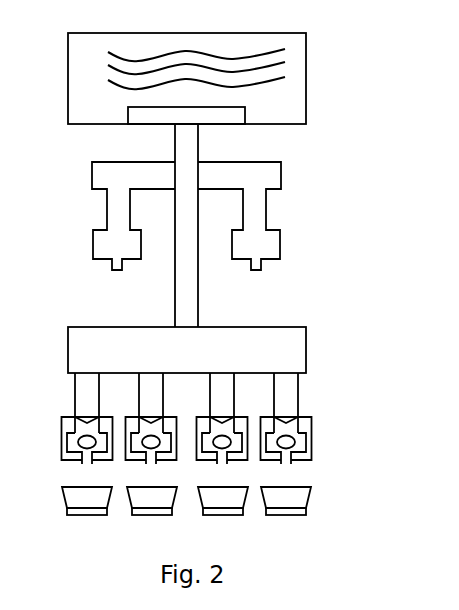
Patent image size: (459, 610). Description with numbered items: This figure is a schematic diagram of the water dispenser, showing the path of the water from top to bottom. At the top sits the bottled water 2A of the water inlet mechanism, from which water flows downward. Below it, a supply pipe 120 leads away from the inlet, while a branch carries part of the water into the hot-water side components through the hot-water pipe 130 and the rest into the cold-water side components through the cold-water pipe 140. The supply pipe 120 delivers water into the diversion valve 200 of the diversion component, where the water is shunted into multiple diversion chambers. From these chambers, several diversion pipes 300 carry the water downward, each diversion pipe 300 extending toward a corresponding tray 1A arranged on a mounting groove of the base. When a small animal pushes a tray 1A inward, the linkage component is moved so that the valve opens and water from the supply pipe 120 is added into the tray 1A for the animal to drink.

The bottled water 2A is at (290, 77).
The supply pipe 120 is at (193, 308).
The hot-water pipe 130 is at (107, 211).
The cold-water pipe 140 is at (264, 214).
The diversion valve 200 is at (295, 350).
The diversion pipe 300 is at (293, 400).
The tray 1A is at (302, 492).